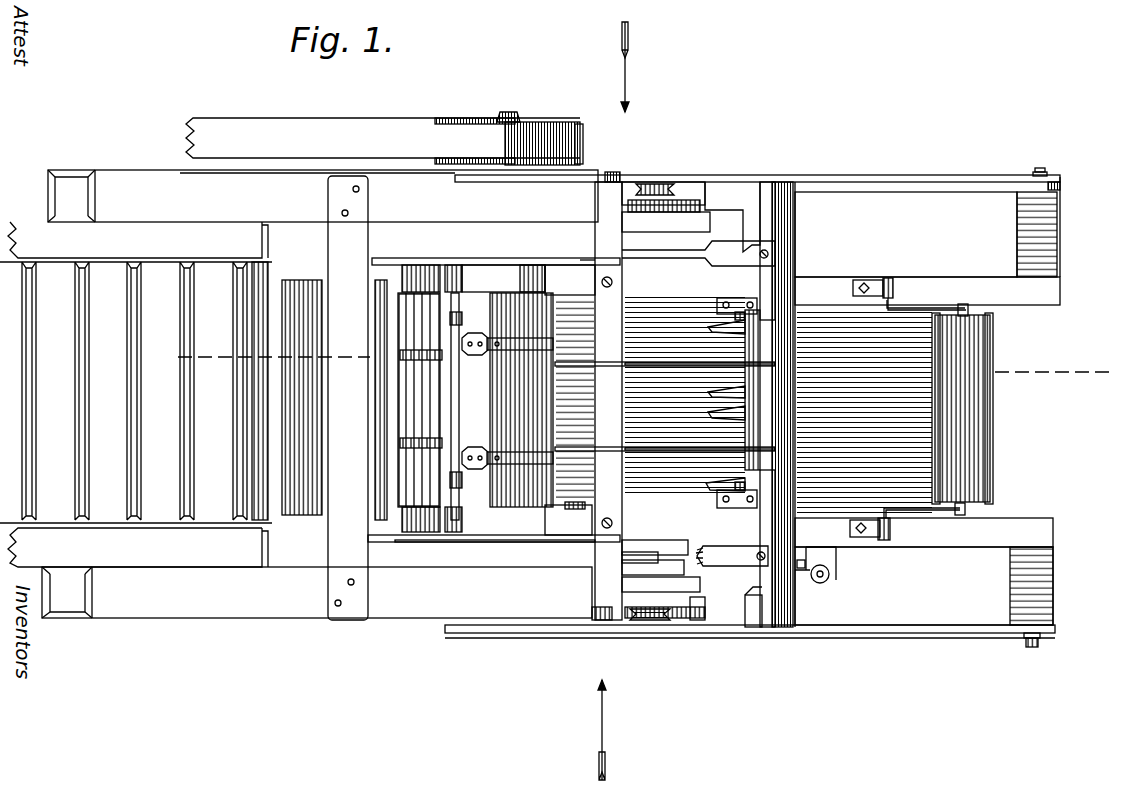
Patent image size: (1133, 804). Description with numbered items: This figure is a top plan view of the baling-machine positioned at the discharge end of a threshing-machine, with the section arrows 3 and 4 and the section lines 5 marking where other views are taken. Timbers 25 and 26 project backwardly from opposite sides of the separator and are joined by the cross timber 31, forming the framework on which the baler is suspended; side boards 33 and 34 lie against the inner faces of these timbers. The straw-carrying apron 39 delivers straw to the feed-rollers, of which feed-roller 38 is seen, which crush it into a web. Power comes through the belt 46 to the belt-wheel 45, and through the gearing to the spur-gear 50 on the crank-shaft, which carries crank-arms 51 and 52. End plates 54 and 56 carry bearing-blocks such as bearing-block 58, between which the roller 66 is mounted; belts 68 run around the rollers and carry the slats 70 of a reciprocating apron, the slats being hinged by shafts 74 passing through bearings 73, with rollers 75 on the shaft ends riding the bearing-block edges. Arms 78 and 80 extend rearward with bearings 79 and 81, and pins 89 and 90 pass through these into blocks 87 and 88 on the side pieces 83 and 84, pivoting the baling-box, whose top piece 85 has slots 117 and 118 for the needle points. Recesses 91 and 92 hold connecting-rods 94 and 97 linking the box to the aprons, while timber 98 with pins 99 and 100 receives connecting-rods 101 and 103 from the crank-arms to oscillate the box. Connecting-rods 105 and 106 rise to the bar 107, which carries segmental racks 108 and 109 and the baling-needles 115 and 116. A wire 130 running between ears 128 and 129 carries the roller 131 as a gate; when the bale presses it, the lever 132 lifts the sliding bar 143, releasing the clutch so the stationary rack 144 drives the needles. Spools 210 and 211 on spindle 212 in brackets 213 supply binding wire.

The arrows 3 is at (608, 730).
The arrows 4 is at (631, 67).
The lines 5 5 is at (637, 364).
The timber 25 is at (317, 592).
The timber 26 is at (323, 196).
The timber 31 is at (348, 398).
The side board 33 is at (495, 552).
The side board 34 is at (427, 370).
The feed-roller 38 is at (305, 516).
The straw-carrying apron 39 is at (136, 392).
The belt-wheel 45 is at (543, 122).
The belt 46 is at (383, 138).
The spur-gear 50 is at (637, 216).
The crank-arm 51 is at (692, 197).
The crank-arm 52 is at (696, 622).
The end plate 54 is at (534, 252).
The end plate 56 is at (494, 549).
The bearing-block 58 is at (503, 278).
The roller 66 is at (521, 400).
The belts 68 is at (475, 447).
The slats 70 is at (412, 398).
The bearings 73 is at (462, 317).
The shafts 74 is at (442, 388).
The rollers 75 is at (428, 270).
The arms 78 is at (728, 632).
The bearing 79 is at (1028, 648).
The arms 80 is at (737, 180).
The bearing 81 is at (1056, 180).
The side piece 83 is at (1062, 295).
The side piece 84 is at (1055, 532).
The top piece 85 is at (778, 404).
The block 87 is at (1062, 232).
The block 88 is at (1056, 580).
The pin 89 is at (1041, 168).
The pin 90 is at (1040, 647).
The recess 91 is at (582, 504).
The recess 92 is at (583, 263).
The connecting-rod 94 is at (562, 296).
The connecting-rod 97 is at (568, 520).
The timber 98 is at (607, 400).
The pin 99 is at (601, 624).
The pin 100 is at (618, 166).
The connecting-rod 101 is at (655, 185).
The connecting-rod 103 is at (656, 622).
The connecting-rod 105 is at (920, 193).
The connecting-rod 106 is at (935, 624).
The bar 107 is at (793, 212).
The segmental rack 108 is at (740, 250).
The segmental rack 109 is at (732, 556).
The baling-needle 115 is at (660, 360).
The baling-needle 116 is at (660, 447).
The slot 117 is at (572, 367).
The slot 118 is at (560, 452).
The ear 128 is at (893, 529).
The ear 129 is at (896, 290).
The wire 130 is at (898, 508).
The roller 131 is at (992, 462).
The lever 132 is at (830, 560).
The sliding bar 143 is at (716, 576).
The segmental rack 144 is at (628, 552).
The spool 210 is at (706, 487).
The spool 211 is at (710, 328).
The spindle 212 is at (740, 509).
The brackets 213 is at (740, 300).